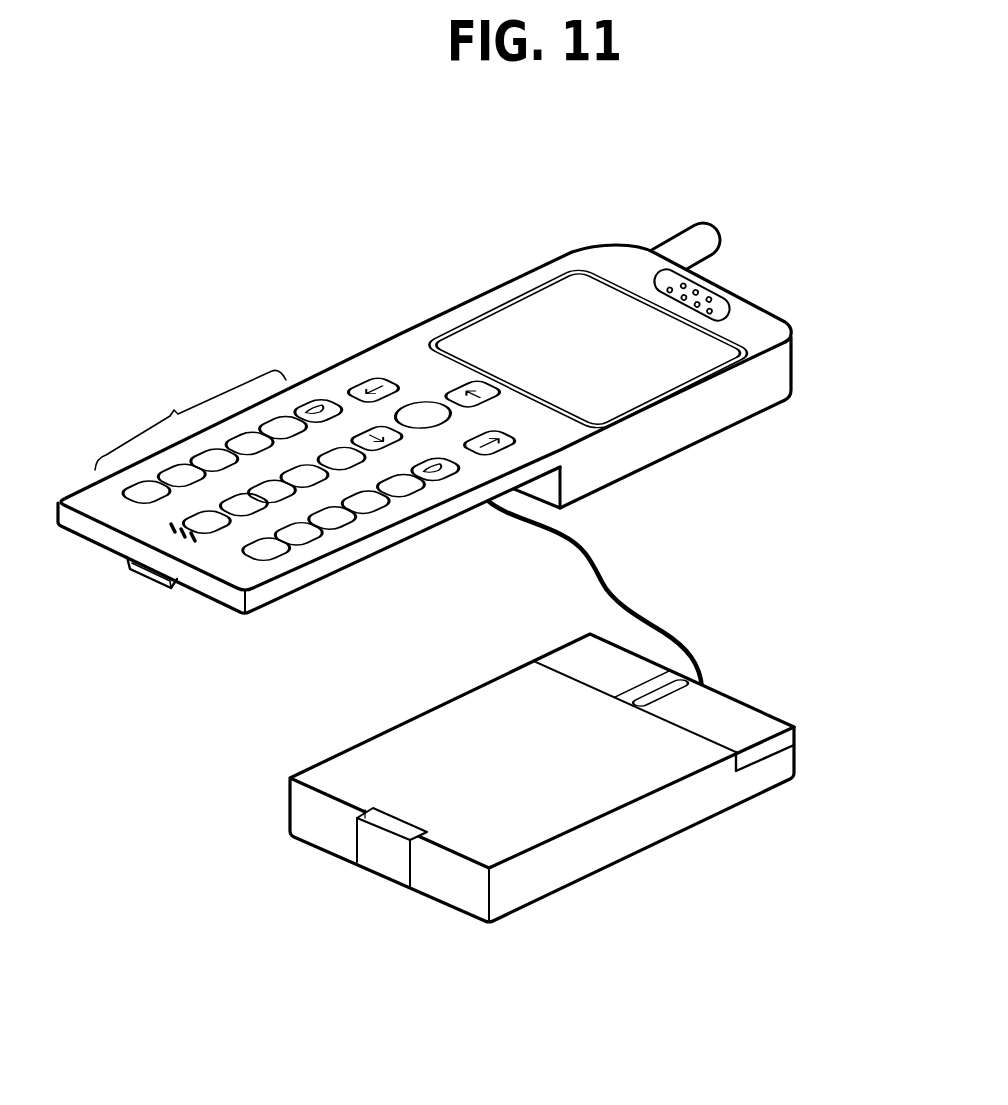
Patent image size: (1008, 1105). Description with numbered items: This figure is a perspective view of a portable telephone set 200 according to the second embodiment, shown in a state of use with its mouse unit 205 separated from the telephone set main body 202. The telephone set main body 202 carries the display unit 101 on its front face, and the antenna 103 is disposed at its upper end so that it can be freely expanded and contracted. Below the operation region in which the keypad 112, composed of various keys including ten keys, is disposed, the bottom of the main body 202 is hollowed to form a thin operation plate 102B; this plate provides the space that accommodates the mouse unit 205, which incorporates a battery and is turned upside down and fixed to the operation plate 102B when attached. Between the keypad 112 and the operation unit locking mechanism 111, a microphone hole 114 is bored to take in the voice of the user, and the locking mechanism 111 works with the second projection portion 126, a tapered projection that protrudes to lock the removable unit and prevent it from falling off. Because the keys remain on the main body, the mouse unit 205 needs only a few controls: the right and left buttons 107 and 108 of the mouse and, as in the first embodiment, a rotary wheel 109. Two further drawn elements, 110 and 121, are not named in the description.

The display unit 101 is at (512, 313).
The operation plate 102B is at (393, 535).
The antenna 103 is at (677, 243).
The right button 107 is at (567, 755).
The left button 108 is at (577, 653).
The rotary wheel 109 is at (643, 707).
The speaker 110 is at (707, 287).
The operation unit locking mechanism 111 is at (387, 860).
The keypad 112 is at (190, 420).
The microphone hole 114 is at (168, 525).
The cable 121 is at (624, 596).
The second projection portion 126 is at (148, 585).
The portable telephone set 200 is at (816, 383).
The telephone set main body 202 is at (690, 433).
The mouse unit 205 is at (637, 833).